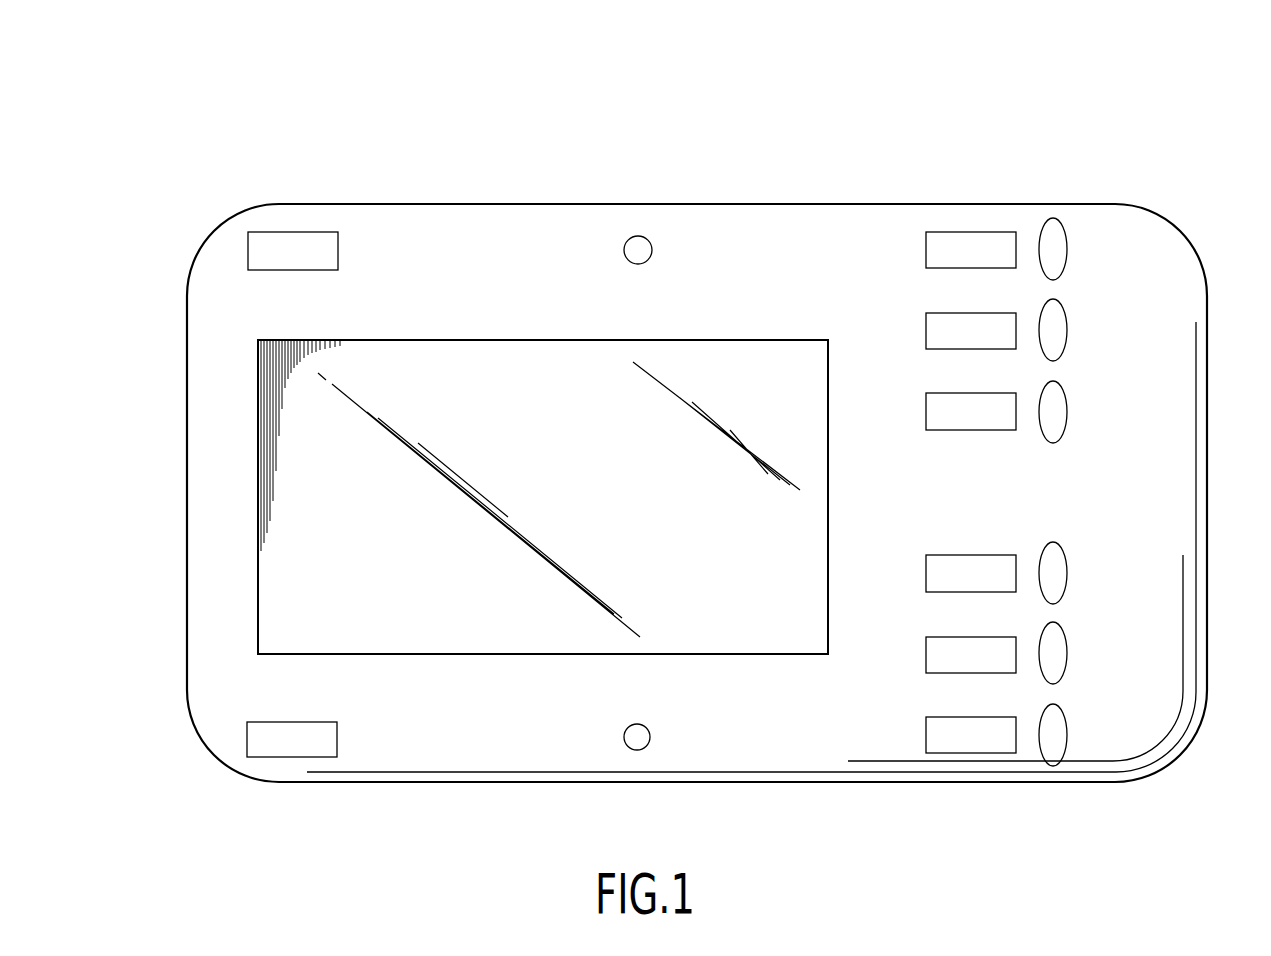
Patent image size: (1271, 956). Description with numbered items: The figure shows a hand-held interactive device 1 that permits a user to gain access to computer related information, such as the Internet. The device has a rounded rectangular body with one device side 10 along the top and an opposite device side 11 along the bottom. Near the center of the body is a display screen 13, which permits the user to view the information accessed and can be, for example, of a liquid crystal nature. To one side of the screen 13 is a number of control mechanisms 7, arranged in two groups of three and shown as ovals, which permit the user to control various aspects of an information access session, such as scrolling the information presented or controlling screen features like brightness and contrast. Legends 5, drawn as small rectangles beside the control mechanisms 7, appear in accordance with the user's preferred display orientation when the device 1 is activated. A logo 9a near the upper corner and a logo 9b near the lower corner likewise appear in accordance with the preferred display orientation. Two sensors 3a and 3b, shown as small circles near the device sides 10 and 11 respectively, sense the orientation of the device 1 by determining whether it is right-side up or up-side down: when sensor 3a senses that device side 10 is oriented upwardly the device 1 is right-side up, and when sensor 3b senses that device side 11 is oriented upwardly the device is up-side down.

The hand-held interactive device 1 is at (862, 160).
The sensor 3a is at (630, 242).
The sensor 3b is at (647, 740).
The legends 5 is at (900, 296).
The control mechanisms 7 is at (1112, 330).
The logo 9a is at (248, 246).
The logo 9b is at (247, 745).
The device side 10 is at (362, 204).
The device side 11 is at (951, 782).
The display screen 13 is at (258, 405).